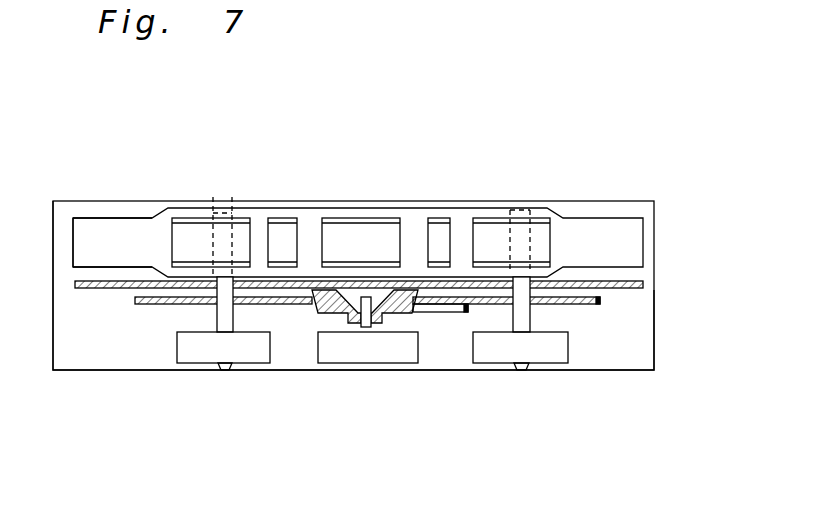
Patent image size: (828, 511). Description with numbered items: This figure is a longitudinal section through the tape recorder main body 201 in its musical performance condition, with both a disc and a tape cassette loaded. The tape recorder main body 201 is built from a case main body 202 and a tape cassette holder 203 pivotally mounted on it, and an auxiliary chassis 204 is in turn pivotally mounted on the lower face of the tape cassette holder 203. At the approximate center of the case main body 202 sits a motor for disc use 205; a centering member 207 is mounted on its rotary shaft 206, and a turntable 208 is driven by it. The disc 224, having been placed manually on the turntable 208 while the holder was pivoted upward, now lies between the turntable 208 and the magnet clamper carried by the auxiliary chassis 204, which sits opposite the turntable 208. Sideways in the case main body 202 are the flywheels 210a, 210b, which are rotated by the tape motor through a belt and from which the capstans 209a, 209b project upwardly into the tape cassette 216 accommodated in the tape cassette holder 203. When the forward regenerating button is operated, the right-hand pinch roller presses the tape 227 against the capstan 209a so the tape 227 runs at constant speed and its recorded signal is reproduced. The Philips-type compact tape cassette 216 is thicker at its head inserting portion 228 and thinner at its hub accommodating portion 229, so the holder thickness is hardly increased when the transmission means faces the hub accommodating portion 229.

The tape recorder main body 201 is at (333, 388).
The case main body 202 is at (635, 350).
The tape cassette holder 203 is at (650, 220).
The auxiliary chassis 204 is at (640, 278).
The motor for disc use 205 is at (382, 353).
The rotary shaft 206 is at (367, 325).
The centering member 207 is at (307, 313).
The turntable 208 is at (455, 313).
The capstan 209a is at (522, 237).
The capstan 209b is at (222, 213).
The flywheel 210a is at (553, 348).
The flywheel 210b is at (190, 355).
The tape cassette 216 is at (117, 237).
The disc 224 is at (588, 303).
The tape 227 is at (365, 232).
The head inserting portion 228 is at (197, 212).
The hub accommodating portion 229 is at (88, 212).